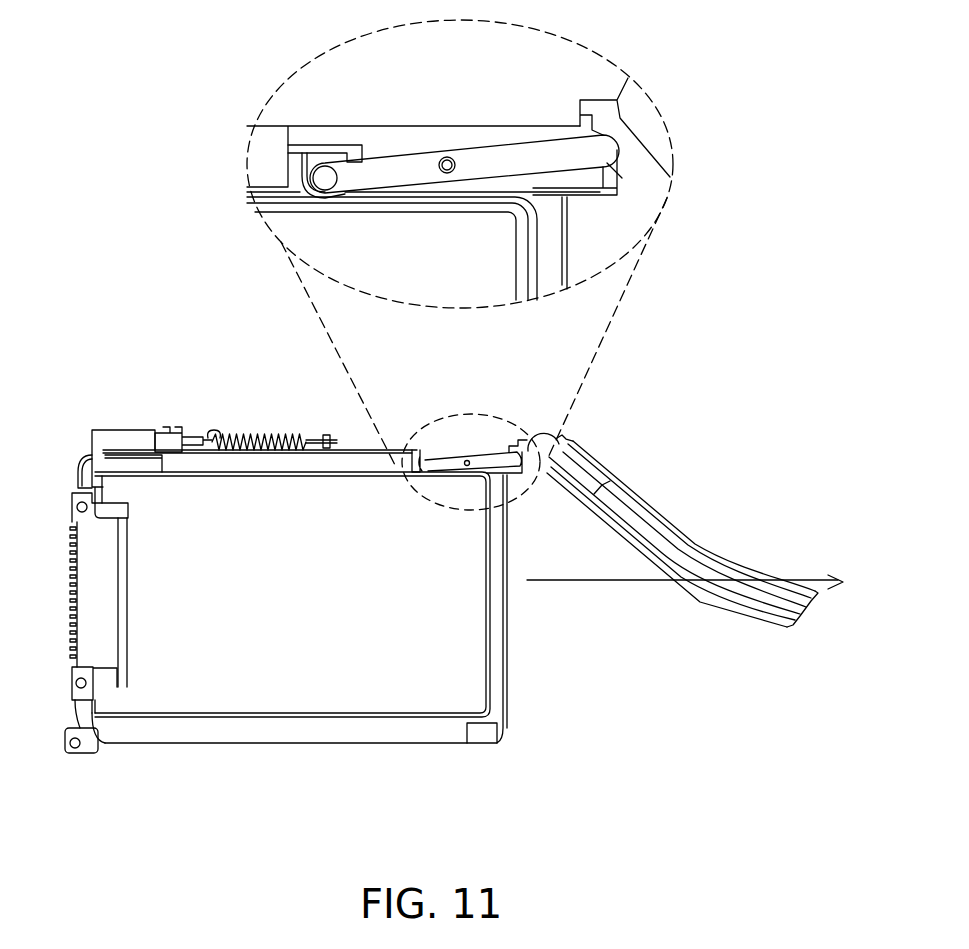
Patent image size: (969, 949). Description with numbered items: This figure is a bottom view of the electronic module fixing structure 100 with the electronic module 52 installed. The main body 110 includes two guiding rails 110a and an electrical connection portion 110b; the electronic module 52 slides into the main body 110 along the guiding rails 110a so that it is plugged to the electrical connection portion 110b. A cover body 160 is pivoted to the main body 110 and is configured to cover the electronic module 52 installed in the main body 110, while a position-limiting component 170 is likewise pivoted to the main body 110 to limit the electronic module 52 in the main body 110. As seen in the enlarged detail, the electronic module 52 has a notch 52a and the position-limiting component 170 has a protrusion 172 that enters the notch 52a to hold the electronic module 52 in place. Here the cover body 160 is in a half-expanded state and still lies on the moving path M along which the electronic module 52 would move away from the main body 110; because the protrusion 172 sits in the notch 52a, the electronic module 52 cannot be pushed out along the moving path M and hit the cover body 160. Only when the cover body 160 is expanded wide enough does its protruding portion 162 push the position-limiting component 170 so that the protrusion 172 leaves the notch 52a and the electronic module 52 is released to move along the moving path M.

The electronic module fixing structure 100 is at (192, 390).
The main body 110 is at (98, 812).
The guiding rails 110a is at (140, 732).
The electrical connection portion 110b is at (92, 578).
The electronic module 52 is at (362, 687).
The notch 52a is at (326, 178).
The cover body 160 is at (713, 560).
The protruding portion 162 is at (580, 115).
The position-limiting component 170 is at (517, 150).
The protrusion 172 is at (336, 178).
The moving path M is at (653, 582).